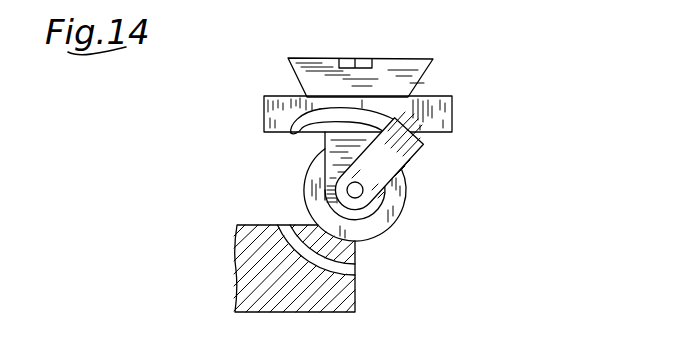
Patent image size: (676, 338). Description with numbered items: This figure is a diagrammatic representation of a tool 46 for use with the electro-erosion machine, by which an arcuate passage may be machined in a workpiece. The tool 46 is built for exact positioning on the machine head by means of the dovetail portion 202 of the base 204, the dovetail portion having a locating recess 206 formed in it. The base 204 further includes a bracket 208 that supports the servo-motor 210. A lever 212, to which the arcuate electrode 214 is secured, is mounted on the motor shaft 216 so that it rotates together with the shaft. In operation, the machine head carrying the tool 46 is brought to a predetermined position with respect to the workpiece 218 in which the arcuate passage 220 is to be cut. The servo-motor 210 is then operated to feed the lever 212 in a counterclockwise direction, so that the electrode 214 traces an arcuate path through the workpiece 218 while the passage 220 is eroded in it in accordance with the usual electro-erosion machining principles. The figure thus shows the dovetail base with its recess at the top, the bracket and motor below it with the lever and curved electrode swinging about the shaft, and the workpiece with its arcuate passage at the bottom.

The tool 46 is at (553, 131).
The dovetail portion 202 is at (318, 59).
The base 204 is at (455, 106).
The locating recess 206 is at (363, 56).
The bracket 208 is at (320, 138).
The servo-motor 210 is at (408, 203).
The lever 212 is at (418, 152).
The arcuate electrode 214 is at (276, 116).
The motor shaft 216 is at (357, 192).
The workpiece 218 is at (355, 303).
The arcuate passage 220 is at (283, 226).